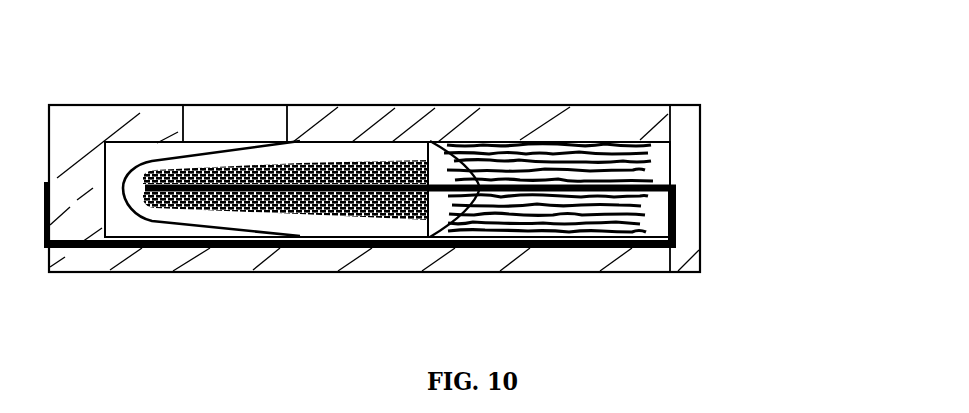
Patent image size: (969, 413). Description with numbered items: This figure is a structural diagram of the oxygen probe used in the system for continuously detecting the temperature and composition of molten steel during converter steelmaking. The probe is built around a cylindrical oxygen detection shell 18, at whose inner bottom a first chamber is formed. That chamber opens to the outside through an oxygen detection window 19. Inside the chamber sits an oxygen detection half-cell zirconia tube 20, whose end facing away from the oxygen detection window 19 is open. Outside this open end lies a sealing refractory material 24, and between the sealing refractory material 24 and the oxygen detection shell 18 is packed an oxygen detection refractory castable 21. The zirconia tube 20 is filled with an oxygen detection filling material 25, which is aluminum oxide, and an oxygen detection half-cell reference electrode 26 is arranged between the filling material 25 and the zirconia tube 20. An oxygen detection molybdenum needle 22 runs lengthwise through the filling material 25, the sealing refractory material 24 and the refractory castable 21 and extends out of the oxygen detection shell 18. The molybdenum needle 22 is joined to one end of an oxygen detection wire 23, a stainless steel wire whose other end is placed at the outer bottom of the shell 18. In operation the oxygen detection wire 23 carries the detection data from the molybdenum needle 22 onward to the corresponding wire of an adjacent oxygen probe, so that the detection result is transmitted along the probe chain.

The oxygen detection shell 18 is at (82, 133).
The oxygen detection window 19 is at (263, 126).
The oxygen detection half-cell zirconia tube 20 is at (383, 155).
The oxygen detection refractory castable 21 is at (590, 144).
The oxygen detection molybdenum needle 22 is at (674, 187).
The oxygen detection wire 23 is at (673, 246).
The sealing refractory material 24 is at (508, 248).
The oxygen detection filling material 25 is at (371, 212).
The oxygen detection half-cell reference electrode 26 is at (185, 207).